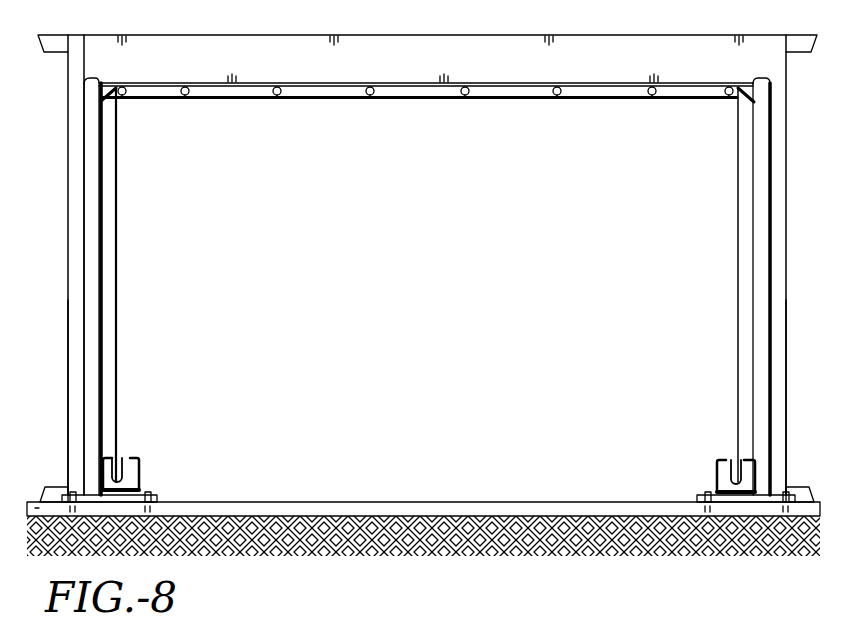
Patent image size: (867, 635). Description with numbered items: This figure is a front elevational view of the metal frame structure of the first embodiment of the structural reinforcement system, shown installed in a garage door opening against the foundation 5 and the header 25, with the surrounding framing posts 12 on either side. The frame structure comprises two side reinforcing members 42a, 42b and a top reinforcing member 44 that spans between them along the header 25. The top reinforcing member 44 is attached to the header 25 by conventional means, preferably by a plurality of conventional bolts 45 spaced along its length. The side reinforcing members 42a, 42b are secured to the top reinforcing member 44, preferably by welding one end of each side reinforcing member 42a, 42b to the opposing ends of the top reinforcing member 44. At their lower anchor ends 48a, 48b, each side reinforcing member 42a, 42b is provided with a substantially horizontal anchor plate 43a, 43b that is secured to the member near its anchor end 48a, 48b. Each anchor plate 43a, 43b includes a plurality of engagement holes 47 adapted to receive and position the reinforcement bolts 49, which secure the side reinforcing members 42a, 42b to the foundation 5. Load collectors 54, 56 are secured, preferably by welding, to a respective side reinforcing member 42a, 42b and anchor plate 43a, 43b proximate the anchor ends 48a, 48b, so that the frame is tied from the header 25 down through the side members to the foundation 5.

The foundation 5 is at (29, 512).
The frame upright post 12 is at (67, 156).
The header 25 is at (516, 52).
The side reinforcing member 42a is at (84, 243).
The side reinforcing member 42b is at (771, 311).
The anchor plate 43a is at (50, 490).
The anchor plate 43b is at (797, 495).
The top reinforcing member 44 is at (310, 94).
The bolts 45 is at (352, 98).
The engagement holes 47 is at (160, 498).
The anchor end 48a is at (68, 425).
The anchor end 48b is at (788, 428).
The reinforcement bolts 49 is at (148, 494).
The load collector 54 is at (138, 468).
The load collector 56 is at (717, 463).